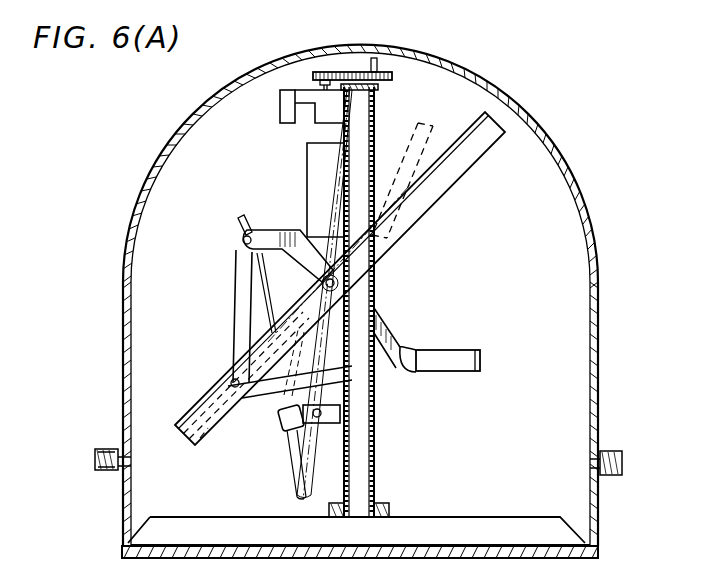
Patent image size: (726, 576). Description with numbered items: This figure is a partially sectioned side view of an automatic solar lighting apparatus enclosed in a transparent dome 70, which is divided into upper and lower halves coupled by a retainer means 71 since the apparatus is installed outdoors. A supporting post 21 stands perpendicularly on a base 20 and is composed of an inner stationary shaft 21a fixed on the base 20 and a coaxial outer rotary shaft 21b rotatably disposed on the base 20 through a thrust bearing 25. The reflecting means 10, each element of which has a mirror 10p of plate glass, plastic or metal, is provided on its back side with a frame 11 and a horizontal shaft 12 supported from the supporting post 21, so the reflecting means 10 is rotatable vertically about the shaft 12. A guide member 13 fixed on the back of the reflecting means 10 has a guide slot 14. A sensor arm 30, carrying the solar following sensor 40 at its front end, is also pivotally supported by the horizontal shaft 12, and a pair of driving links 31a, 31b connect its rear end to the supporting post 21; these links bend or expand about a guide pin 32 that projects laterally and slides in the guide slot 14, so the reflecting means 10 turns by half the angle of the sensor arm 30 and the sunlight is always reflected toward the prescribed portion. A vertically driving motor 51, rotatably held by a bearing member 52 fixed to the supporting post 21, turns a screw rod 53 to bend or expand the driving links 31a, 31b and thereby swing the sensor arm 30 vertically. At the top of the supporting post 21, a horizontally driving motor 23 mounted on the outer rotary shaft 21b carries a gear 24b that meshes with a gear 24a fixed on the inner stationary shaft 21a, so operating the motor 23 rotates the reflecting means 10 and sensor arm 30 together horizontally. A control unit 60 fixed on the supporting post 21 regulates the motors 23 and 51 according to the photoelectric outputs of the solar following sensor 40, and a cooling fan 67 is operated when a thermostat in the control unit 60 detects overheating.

The transparent dome 70 is at (492, 76).
The retainer means 71 is at (95, 468).
The base 20 is at (504, 537).
The supporting post 21 is at (376, 300).
The inner stationary shaft 21a is at (347, 456).
The outer rotary shaft 21b is at (372, 478).
The gear 24a is at (392, 12).
The gear 24b is at (324, 71).
The cooling fan 67 is at (280, 106).
The horizontally driving motor 23 is at (318, 115).
The control unit 60 is at (316, 172).
The solar following sensor 40 is at (410, 142).
The sensor arm 30 is at (398, 346).
The reflecting means 10 is at (361, 266).
The mirror 10p is at (432, 202).
The frame 11 is at (465, 135).
The guide member 13 is at (190, 406).
The guide slot 14 is at (190, 440).
The horizontal shaft 12 is at (322, 284).
The screw rod 53 is at (264, 298).
The driving link 31a is at (237, 323).
The driving link 31b is at (262, 393).
The guide pin 32 is at (230, 378).
The bearing member 52 is at (333, 417).
The vertically driving motor 51 is at (283, 431).
The thrust bearing 25 is at (383, 508).